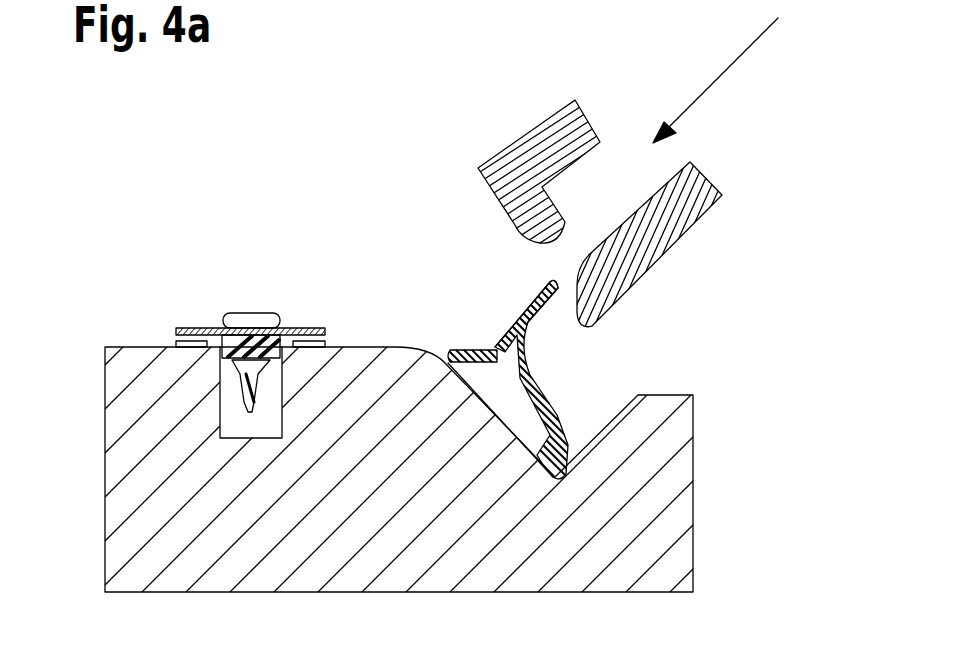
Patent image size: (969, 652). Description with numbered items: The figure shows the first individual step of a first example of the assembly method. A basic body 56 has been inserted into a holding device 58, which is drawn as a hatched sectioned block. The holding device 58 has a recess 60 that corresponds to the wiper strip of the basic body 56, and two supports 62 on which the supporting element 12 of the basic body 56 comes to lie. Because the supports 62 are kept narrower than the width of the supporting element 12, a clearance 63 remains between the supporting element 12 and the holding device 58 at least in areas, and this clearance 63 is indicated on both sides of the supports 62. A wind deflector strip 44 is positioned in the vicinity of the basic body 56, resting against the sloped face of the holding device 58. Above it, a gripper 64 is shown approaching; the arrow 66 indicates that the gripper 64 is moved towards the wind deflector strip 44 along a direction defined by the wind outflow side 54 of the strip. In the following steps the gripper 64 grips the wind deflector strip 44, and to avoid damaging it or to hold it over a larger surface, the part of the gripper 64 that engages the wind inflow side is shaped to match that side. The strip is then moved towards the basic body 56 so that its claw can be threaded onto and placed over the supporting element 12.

The supporting element 12 is at (310, 333).
The wind deflector strip 44 is at (533, 375).
The wind outflow side 54 is at (516, 320).
The basic body 56 is at (182, 305).
The holding device 58 is at (147, 487).
The recess 60 is at (240, 425).
The supports 62 is at (213, 336).
The clearance 63 is at (183, 343).
The gripper 64 is at (737, 212).
The arrow 66 is at (725, 68).